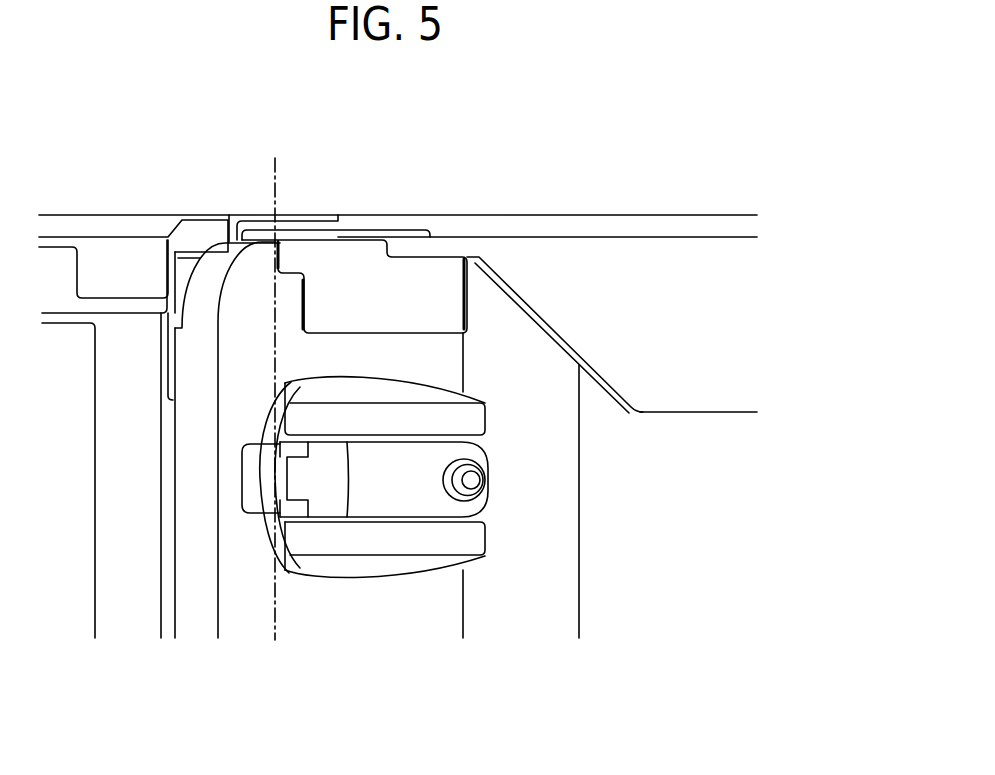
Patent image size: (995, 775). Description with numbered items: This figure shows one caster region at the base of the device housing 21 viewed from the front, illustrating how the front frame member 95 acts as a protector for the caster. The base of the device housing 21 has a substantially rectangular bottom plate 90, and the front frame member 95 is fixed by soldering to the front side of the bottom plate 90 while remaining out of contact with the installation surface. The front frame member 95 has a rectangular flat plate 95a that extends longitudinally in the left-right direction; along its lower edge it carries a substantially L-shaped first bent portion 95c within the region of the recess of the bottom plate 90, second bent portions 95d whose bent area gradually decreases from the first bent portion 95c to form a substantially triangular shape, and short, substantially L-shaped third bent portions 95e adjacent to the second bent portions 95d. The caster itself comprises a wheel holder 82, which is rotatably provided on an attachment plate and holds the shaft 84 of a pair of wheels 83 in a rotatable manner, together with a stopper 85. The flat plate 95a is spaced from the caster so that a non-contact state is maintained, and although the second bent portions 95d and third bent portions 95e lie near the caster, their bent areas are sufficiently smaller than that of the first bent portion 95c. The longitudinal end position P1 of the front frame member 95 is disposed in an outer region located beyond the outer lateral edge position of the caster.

The device housing 21 is at (645, 212).
The front frame member 95 is at (564, 226).
The flat plate 95a is at (483, 228).
The first bent portion 95c is at (682, 287).
The second bent portion 95d is at (557, 300).
The third bent portion 95e is at (410, 250).
The bottom plate 90 is at (552, 470).
The wheel holder 82 is at (425, 492).
The wheel 83 is at (385, 562).
The shaft 84 is at (360, 523).
The stopper 85 is at (237, 520).
The longitudinal end position P1 is at (281, 385).